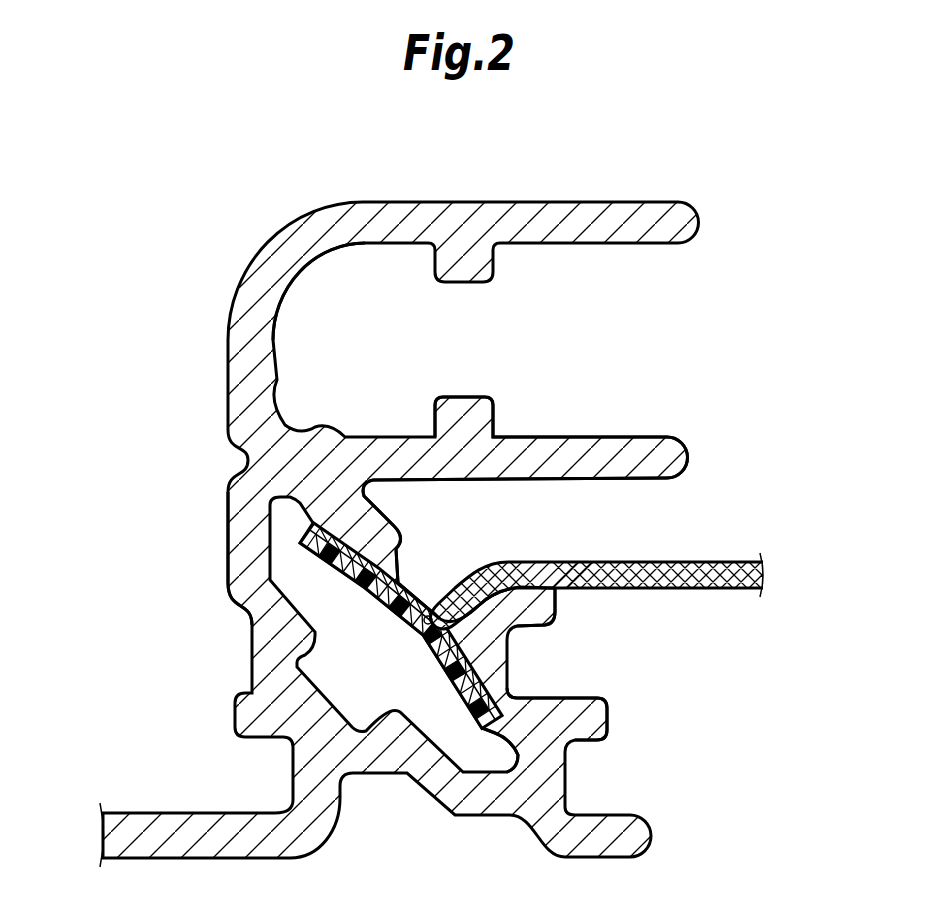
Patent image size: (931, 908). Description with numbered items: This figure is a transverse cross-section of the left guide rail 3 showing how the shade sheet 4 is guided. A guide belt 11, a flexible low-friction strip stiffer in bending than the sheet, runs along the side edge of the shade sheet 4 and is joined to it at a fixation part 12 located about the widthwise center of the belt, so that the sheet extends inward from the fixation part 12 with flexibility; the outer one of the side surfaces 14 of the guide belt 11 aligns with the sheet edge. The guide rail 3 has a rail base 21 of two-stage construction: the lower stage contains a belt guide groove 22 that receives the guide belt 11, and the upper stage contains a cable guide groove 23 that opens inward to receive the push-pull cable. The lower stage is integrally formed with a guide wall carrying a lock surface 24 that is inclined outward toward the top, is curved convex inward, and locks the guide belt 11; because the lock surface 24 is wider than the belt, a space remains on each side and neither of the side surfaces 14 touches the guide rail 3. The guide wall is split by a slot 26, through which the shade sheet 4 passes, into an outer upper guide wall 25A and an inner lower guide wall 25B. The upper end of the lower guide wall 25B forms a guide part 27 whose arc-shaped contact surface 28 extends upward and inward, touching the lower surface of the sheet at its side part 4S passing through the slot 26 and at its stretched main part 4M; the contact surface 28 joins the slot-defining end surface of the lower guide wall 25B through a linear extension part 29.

The guide rail 3 is at (232, 277).
The shade sheet 4 is at (557, 564).
The main part 4M is at (668, 563).
The side part 4S is at (427, 615).
The guide belt 11 is at (345, 572).
The fixation part 12 is at (420, 624).
The side surfaces 14 is at (253, 630).
The rail base 21 is at (240, 554).
The belt guide groove 22 is at (445, 703).
The cable guide groove 23 is at (386, 311).
The lock surface 24 is at (338, 688).
The upper guide wall 25A is at (375, 520).
The lower guide wall 25B is at (517, 687).
The slot 26 is at (435, 522).
The guide part 27 is at (537, 608).
The contact surface 28 is at (540, 562).
The linear extension part 29 is at (493, 624).